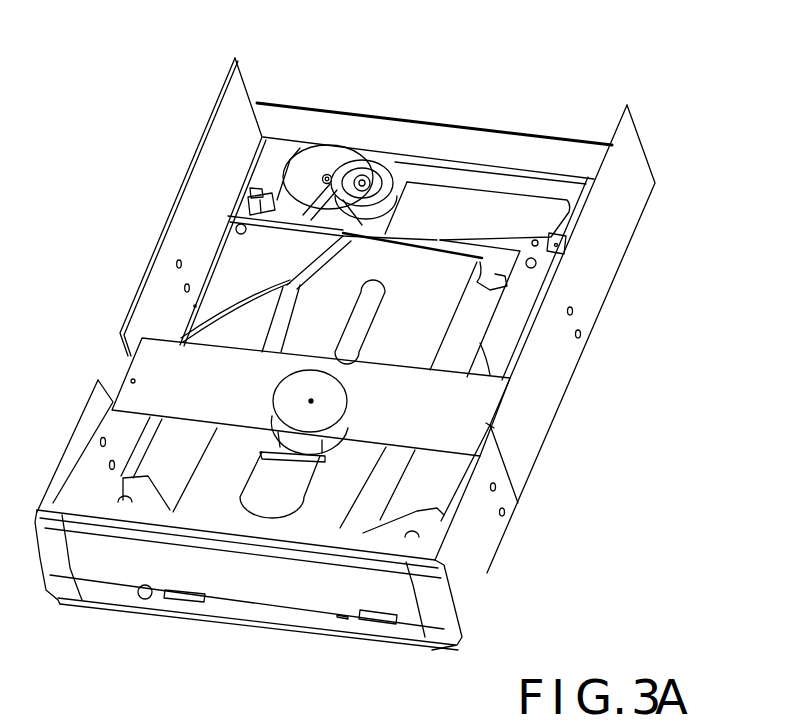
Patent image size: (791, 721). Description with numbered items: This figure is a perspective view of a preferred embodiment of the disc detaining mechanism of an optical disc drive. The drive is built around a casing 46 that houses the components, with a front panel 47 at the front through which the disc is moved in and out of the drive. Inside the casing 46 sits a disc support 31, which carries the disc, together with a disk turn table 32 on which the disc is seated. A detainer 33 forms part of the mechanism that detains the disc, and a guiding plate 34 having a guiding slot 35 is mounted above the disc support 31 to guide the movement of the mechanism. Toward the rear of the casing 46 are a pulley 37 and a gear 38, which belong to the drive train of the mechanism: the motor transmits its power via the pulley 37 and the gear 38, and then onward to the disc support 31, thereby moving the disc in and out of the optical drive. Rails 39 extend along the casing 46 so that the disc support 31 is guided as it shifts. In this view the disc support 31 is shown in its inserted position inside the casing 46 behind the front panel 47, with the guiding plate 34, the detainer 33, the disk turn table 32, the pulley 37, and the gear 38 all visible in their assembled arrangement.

The disc support 31 is at (448, 480).
The disk turn table 32 is at (324, 458).
The detainer 33 is at (347, 396).
The guiding plate 34 is at (500, 410).
The guiding slot 35 is at (252, 503).
The pulley 37 is at (388, 152).
The gear 38 is at (328, 143).
The rail 39 is at (280, 160).
The casing 46 is at (620, 230).
The front panel 47 is at (222, 570).